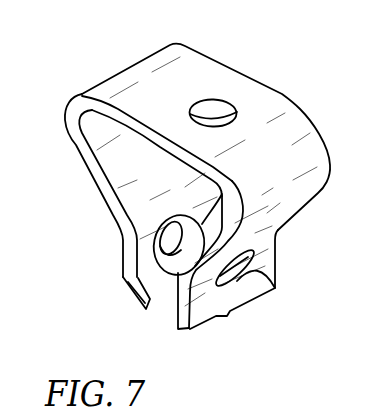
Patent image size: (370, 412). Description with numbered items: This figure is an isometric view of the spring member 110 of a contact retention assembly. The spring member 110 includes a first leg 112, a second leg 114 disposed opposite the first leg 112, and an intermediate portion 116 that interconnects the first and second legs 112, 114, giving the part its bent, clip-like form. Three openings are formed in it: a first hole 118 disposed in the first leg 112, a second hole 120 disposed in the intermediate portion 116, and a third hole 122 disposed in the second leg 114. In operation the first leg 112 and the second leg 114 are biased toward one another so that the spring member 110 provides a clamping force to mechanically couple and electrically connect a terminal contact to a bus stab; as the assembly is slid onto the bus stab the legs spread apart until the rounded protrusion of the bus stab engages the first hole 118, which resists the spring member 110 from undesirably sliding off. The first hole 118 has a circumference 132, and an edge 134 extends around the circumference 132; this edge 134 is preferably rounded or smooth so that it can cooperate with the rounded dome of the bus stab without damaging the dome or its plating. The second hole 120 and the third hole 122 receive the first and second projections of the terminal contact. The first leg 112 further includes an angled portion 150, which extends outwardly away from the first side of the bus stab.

The spring member 110 is at (71, 264).
The first leg 112 is at (137, 244).
The second leg 114 is at (268, 243).
The intermediate portion 116 is at (199, 68).
The first hole 118 is at (173, 218).
The second hole 120 is at (227, 108).
The third hole 122 is at (275, 289).
The circumference 132 is at (162, 296).
The edge 134 is at (225, 190).
The angled portion 150 is at (121, 284).